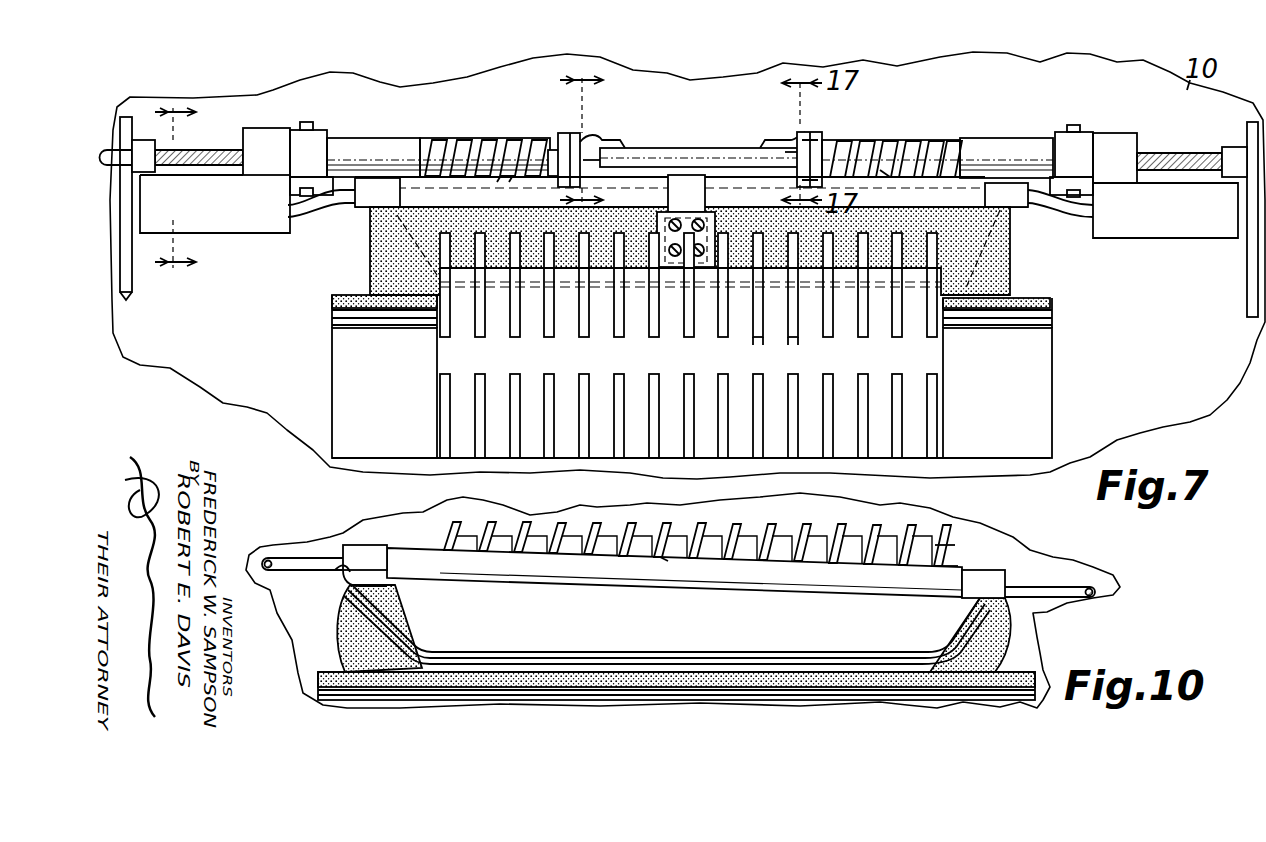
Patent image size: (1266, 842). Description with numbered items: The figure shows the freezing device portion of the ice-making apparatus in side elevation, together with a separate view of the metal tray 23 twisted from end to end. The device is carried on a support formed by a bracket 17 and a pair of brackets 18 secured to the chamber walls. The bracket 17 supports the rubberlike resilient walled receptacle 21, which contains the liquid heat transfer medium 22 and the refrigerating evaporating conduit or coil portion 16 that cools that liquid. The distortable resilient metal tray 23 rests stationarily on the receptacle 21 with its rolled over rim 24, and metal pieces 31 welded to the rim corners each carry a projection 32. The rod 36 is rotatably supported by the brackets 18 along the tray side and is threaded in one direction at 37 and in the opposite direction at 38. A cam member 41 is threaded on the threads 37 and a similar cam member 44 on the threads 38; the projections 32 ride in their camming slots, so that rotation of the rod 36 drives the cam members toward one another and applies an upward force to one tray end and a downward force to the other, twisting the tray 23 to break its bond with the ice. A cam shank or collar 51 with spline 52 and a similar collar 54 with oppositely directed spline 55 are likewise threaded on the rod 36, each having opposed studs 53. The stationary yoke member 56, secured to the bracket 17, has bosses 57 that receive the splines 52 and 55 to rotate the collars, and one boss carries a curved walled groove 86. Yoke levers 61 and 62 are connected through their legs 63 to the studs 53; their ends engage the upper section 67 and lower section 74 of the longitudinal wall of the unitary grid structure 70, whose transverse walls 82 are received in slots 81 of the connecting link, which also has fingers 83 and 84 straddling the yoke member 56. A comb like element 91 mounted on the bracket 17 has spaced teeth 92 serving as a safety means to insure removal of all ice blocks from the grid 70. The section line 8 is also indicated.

In FIG. 7, the section line 8- 8 is at (185, 188).
In FIG. 7, the refrigerating evaporating conduit or coil portion 16 is at (566, 140).
In FIG. 7, the bracket 17 is at (1047, 348).
In FIG. 10, the bracket 17 is at (342, 700).
In FIG. 7, the bracket 18 is at (132, 288).
In FIG. 7, the rubberlike resilient walled receptacle 21 is at (375, 272).
In FIG. 10, the rubberlike resilient walled receptacle 21 is at (362, 648).
In FIG. 10, the fluid heat transfer medium 22 is at (965, 630).
In FIG. 7, the distortable resilient metal tray 23 is at (528, 285).
In FIG. 10, the distortable resilient metal tray 23 is at (598, 592).
In FIG. 7, the rolled over rim 24 is at (668, 195).
In FIG. 10, the rolled over rim 24 is at (412, 560).
In FIG. 7, the metal pieces 31 is at (402, 195).
In FIG. 10, the metal pieces 31 is at (359, 546).
In FIG. 7, the projection 32 is at (316, 215).
In FIG. 10, the projection 32 is at (267, 560).
In FIG. 7, the rod 36 is at (1190, 145).
In FIG. 7, the threads 37 is at (553, 148).
In FIG. 7, the threads 38 is at (812, 148).
In FIG. 7, the cam member 41 is at (270, 225).
In FIG. 7, the cam member 44 is at (1163, 225).
In FIG. 7, the cam shank or collar 51 is at (407, 140).
In FIG. 7, the spline 52 is at (450, 137).
In FIG. 7, the studs 53 is at (308, 126).
In FIG. 7, the cam shank or collar 54 is at (1009, 130).
In FIG. 7, the spline 55 is at (907, 146).
In FIG. 7, the yoke member 56 is at (712, 148).
In FIG. 7, the bosses 57 is at (605, 140).
In FIG. 7, the yoke lever 61 is at (330, 136).
In FIG. 7, the yoke lever 62 is at (1052, 132).
In FIG. 7, the legs 63 is at (293, 132).
In FIG. 10, the upper section 67 is at (779, 563).
In FIG. 7, the grid structure 70 is at (883, 173).
In FIG. 10, the grid structure 70 is at (943, 537).
In FIG. 10, the lower section 74 is at (950, 570).
In FIG. 7, the slots 81 is at (786, 154).
In FIG. 7, the cross or transverse walls 82 is at (497, 180).
In FIG. 10, the cross or transverse walls 82 is at (685, 565).
In FIG. 7, the finger 83 is at (571, 133).
In FIG. 7, the finger 84 is at (806, 132).
In FIG. 7, the curved walled groove 86 is at (602, 160).
In FIG. 7, the comb like element 91 is at (447, 347).
In FIG. 7, the teeth 92 is at (793, 375).